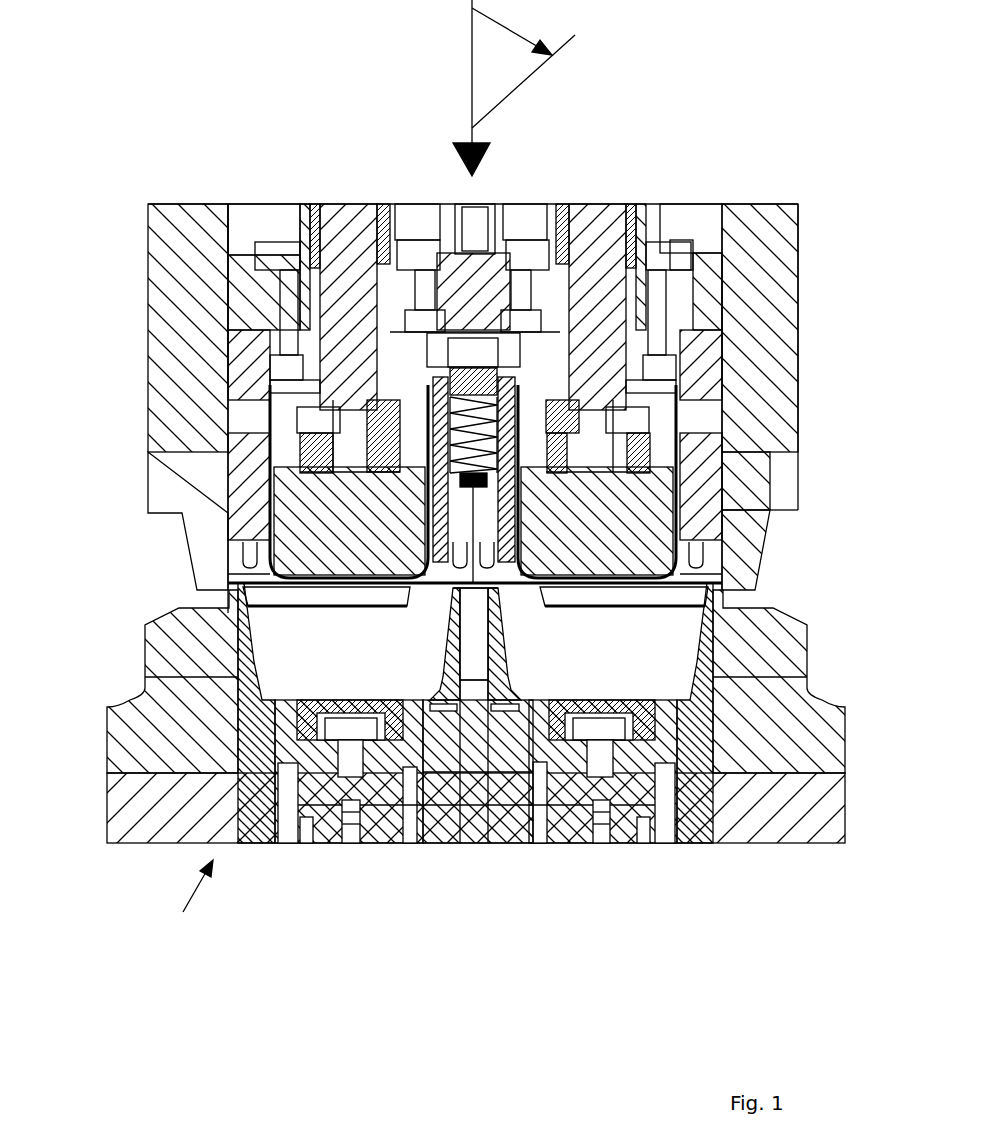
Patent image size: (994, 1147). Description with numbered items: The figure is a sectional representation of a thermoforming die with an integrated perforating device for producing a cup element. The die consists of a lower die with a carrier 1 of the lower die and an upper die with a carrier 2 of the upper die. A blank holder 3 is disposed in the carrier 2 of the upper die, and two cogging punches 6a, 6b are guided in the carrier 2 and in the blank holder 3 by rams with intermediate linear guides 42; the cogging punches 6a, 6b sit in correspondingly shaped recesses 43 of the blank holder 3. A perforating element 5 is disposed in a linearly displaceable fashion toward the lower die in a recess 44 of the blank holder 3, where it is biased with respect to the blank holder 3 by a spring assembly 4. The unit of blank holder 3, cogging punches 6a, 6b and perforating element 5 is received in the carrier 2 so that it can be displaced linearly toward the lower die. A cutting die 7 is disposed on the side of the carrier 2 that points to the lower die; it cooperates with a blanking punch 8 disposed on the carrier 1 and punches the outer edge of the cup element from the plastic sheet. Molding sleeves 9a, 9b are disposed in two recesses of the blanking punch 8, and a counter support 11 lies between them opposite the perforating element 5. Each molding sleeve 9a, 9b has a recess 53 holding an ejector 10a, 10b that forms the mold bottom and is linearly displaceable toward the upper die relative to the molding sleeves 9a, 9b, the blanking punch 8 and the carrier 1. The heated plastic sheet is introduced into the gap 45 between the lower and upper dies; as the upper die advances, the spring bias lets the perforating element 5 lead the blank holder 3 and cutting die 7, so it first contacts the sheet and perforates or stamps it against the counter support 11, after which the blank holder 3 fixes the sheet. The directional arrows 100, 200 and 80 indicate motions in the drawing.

The carrier of the lower die 1 is at (768, 813).
The carrier of the upper die 2 is at (713, 230).
The blank holder 3 is at (702, 368).
The spring assembly 4 is at (692, 246).
The perforating element 5 is at (477, 560).
The cogging punch 6a is at (307, 528).
The cogging punch 6b is at (660, 460).
The cutting die 7 is at (752, 532).
The blanking punch 8 is at (748, 635).
The molding sleeve 9a is at (257, 728).
The molding sleeve 9b is at (688, 728).
The ejector 10a is at (308, 713).
The ejector 10b is at (648, 735).
The counter support 11 is at (474, 667).
The linear guide 42 is at (297, 238).
The recess of the blank holder 43 is at (697, 280).
The recess of the blank holder 44 is at (350, 238).
The gap 45 is at (742, 597).
The recess of the molding sleeve 53 is at (413, 805).
The ejection direction 80 is at (190, 898).
The pressing force direction 100 is at (502, 88).
The lateral force direction 200 is at (512, 31).